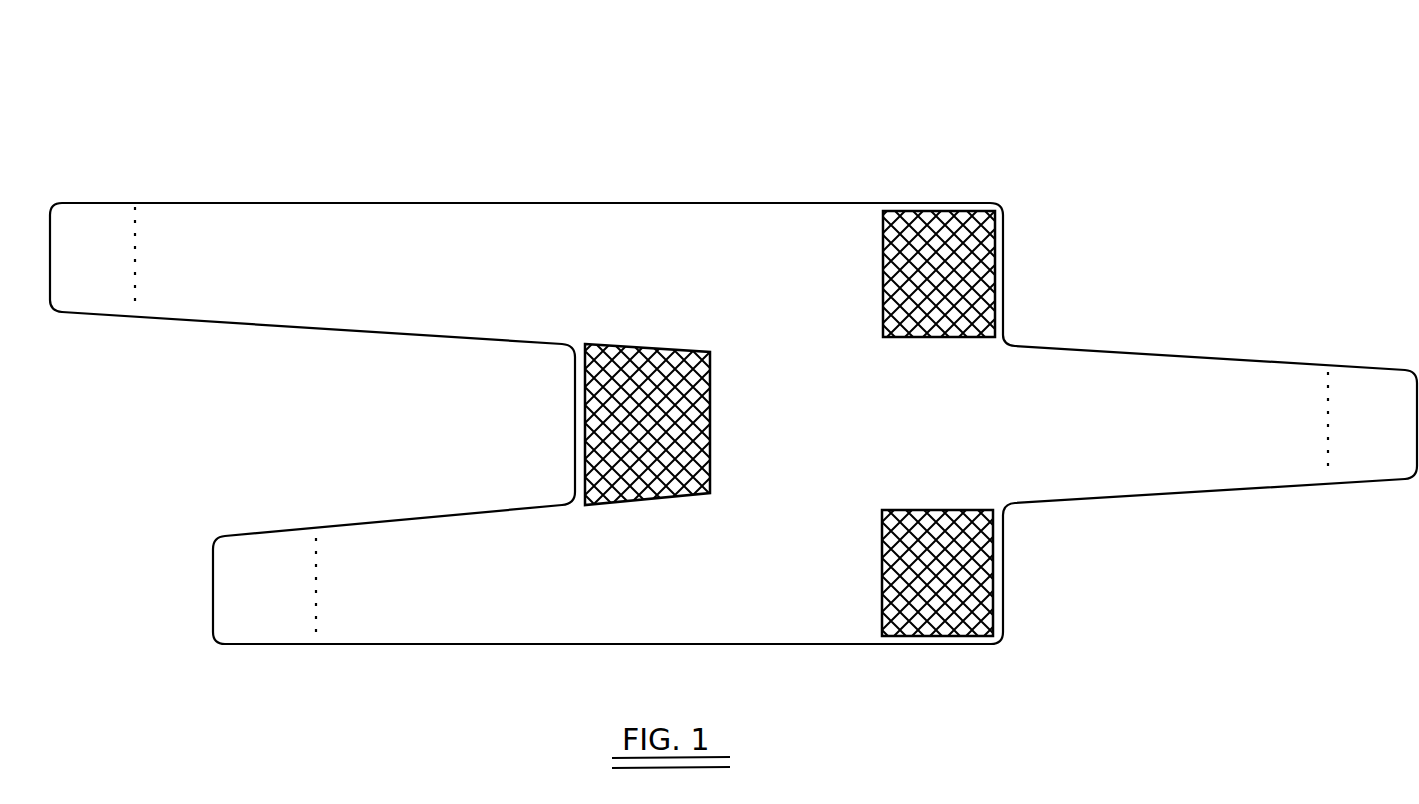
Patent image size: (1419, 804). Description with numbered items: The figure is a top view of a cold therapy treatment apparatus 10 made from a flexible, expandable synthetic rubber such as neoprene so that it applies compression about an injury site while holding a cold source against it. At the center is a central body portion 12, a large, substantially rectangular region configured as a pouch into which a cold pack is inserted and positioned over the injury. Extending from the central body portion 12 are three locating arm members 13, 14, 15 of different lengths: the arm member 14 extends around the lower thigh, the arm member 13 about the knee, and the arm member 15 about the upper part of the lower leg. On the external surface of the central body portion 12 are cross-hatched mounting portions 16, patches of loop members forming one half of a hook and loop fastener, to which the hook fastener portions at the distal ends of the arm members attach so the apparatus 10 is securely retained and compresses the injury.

The cold therapy treatment apparatus 10 is at (1055, 174).
The central body portion 12 is at (800, 433).
The arm member 13 is at (1167, 351).
The arm member 14 is at (217, 202).
The arm member 15 is at (327, 527).
The mounting portion 16 is at (592, 406).